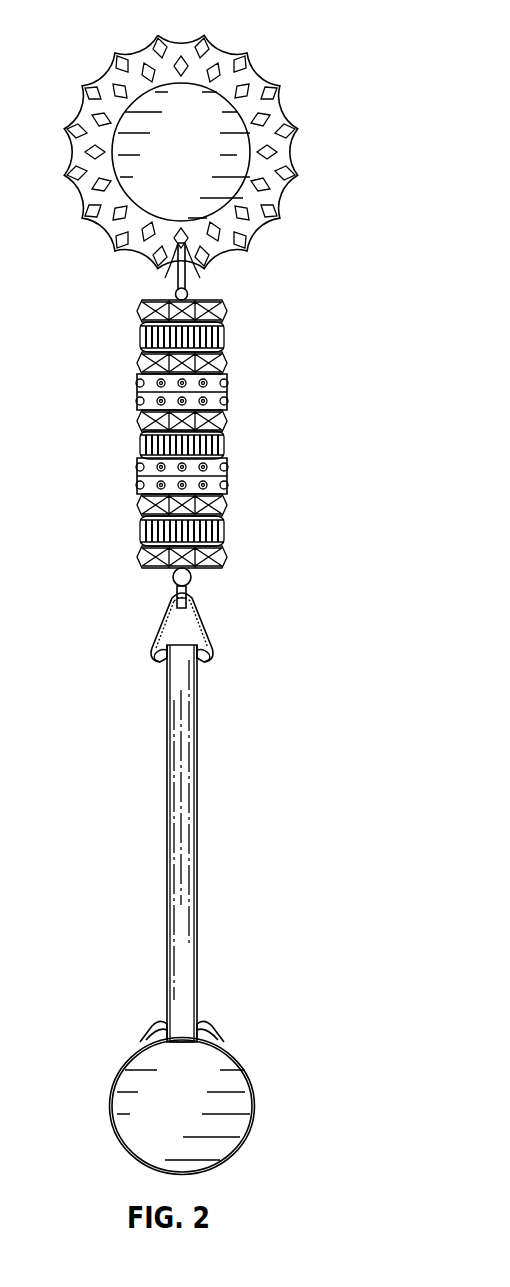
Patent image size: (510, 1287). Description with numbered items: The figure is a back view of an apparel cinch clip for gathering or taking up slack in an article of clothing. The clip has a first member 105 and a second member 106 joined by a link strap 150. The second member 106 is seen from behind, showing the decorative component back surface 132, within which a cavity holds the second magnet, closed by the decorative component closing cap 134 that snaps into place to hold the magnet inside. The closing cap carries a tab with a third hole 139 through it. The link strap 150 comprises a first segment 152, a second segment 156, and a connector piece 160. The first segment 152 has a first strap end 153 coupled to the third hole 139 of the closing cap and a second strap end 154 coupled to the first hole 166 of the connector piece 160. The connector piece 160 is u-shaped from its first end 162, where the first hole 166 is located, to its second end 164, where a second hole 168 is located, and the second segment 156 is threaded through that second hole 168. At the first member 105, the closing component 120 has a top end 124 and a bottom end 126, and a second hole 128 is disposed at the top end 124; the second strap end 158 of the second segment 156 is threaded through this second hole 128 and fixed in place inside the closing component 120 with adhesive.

The first member 105 is at (197, 1083).
The second member 106 is at (239, 191).
The closing component 120 is at (207, 1092).
The top end 124 is at (153, 1027).
The bottom end 126 is at (207, 1170).
The second hole 128 is at (212, 1040).
The decorative component back surface 132 is at (220, 220).
The decorative component closing cap 134 is at (227, 140).
The third hole 139 is at (182, 243).
The link strap 150 is at (168, 434).
The first segment 152 is at (183, 403).
The first strap end 153 is at (178, 291).
The second strap end 154 is at (177, 578).
The second segment 156 is at (168, 810).
The second strap end 158 is at (182, 1027).
The connector piece 160 is at (173, 622).
The first end 162 is at (200, 660).
The second end 164 is at (185, 592).
The first hole 166 is at (190, 603).
The second hole 168 is at (162, 650).